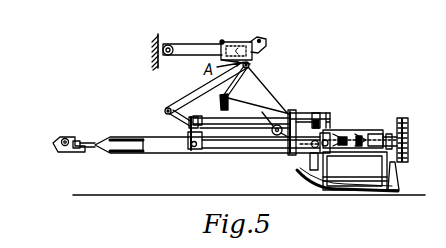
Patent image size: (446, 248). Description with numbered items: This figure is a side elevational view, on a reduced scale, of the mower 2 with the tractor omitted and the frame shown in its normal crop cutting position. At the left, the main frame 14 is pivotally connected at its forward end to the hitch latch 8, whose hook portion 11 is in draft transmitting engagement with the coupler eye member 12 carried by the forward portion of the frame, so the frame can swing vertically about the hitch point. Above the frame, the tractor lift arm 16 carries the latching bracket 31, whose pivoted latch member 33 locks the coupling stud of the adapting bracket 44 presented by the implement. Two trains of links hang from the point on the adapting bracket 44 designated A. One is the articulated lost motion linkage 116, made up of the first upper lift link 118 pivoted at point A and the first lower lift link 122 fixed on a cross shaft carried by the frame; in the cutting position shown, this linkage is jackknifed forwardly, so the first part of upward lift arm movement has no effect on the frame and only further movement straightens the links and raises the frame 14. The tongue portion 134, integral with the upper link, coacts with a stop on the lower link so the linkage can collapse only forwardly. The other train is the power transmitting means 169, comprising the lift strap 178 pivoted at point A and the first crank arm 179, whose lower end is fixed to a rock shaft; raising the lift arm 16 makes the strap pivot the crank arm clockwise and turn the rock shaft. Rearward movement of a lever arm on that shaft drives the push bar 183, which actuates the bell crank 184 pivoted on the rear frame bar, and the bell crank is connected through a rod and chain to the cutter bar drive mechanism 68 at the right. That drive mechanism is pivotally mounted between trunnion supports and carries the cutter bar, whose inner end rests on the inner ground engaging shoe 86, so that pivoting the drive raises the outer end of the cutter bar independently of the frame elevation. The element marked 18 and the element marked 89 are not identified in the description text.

The mower 2 is at (280, 172).
The hitch latch 8 is at (70, 153).
The hook portion 11 is at (78, 141).
The coupler eye member 12 is at (90, 148).
The main frame 14 is at (169, 151).
The lift arm 16 is at (182, 56).
The pivot 18 is at (170, 46).
The latching bracket 31 is at (240, 43).
The latch member 33 is at (258, 42).
The adapting bracket 44 is at (250, 63).
The cutter bar drive mechanism 68 is at (352, 128).
The inner ground engaging shoe 86 is at (298, 178).
The knob 89 is at (383, 130).
The articulated lost motion linkage 116 is at (291, 110).
The first upper lift link 118 is at (238, 96).
The first lower lift link 122 is at (257, 123).
The tongue portion 134 is at (247, 103).
The power transmitting means 169 is at (185, 130).
The lift strap 178 is at (182, 97).
The first crank arm 179 is at (221, 91).
The push bar 183 is at (219, 122).
The bell crank 184 is at (313, 112).